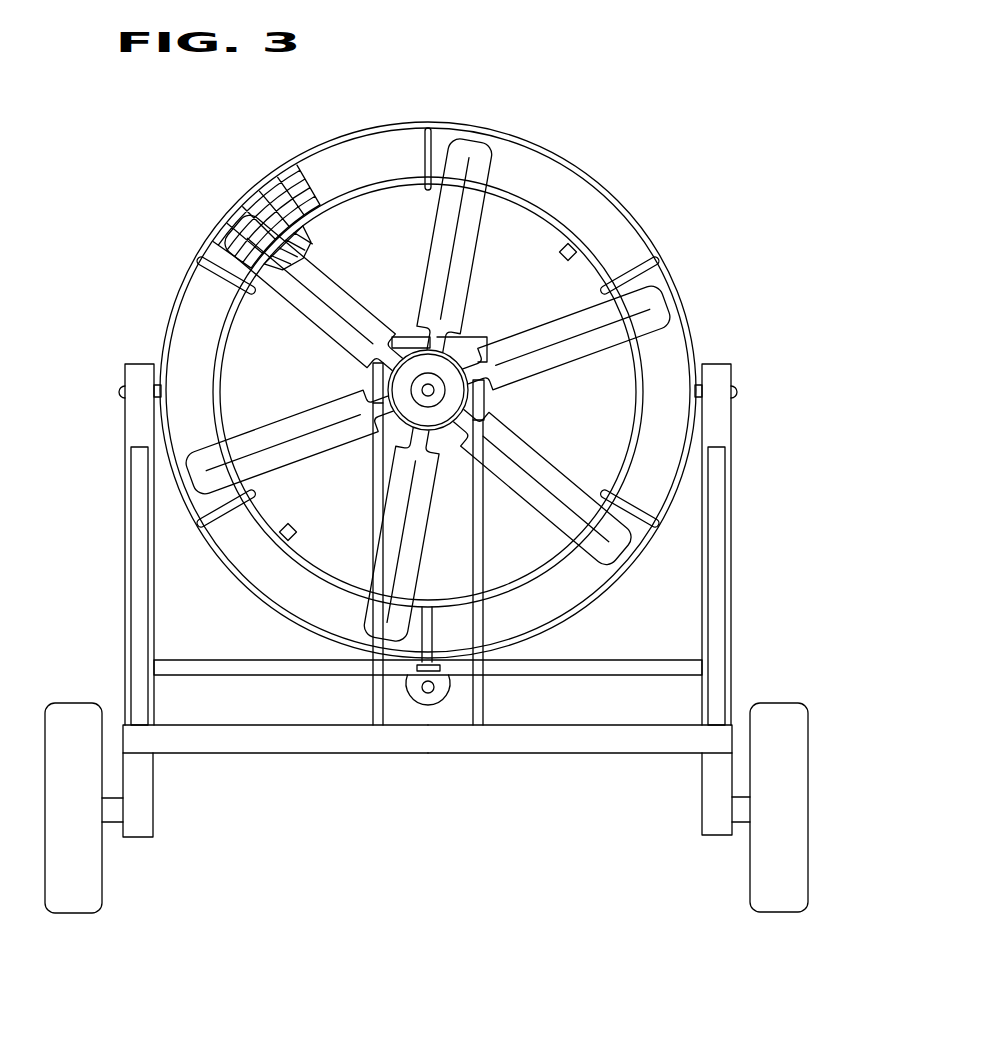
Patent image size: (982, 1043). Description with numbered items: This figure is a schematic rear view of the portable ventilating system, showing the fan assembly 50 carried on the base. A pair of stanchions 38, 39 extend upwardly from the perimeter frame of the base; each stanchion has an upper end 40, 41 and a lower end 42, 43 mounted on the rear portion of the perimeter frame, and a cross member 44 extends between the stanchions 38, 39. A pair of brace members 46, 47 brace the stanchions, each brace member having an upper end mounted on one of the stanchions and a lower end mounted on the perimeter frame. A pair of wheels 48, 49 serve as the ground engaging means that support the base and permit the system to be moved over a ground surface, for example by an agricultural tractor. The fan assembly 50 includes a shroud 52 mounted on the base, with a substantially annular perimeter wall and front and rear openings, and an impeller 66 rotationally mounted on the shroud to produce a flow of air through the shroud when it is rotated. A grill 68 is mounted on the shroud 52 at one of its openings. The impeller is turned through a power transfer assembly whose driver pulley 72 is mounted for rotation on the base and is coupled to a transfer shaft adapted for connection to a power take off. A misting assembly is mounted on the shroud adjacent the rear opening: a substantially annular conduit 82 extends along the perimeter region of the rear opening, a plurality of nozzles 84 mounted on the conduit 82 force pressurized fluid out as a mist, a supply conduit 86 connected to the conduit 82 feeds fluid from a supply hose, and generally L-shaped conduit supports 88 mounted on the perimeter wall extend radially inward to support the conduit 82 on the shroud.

The fan assembly 50 is at (717, 132).
The shroud 52 is at (503, 126).
The conduit 82 is at (617, 213).
The grill 68 is at (268, 178).
The nozzles 84 is at (570, 258).
The conduit supports 88 is at (230, 518).
The impeller 66 is at (593, 337).
The supply conduit 86 is at (427, 637).
The driver pulley 72 is at (433, 698).
The cross member 44 is at (182, 668).
The lower end 42 is at (153, 722).
The lower end 43 is at (702, 720).
The stanchion 38 is at (133, 435).
The stanchion 39 is at (718, 418).
The brace member 46 is at (140, 563).
The brace member 47 is at (716, 513).
The upper end 40 is at (140, 372).
The upper end 41 is at (718, 377).
The wheel 48 is at (72, 720).
The wheel 49 is at (781, 716).